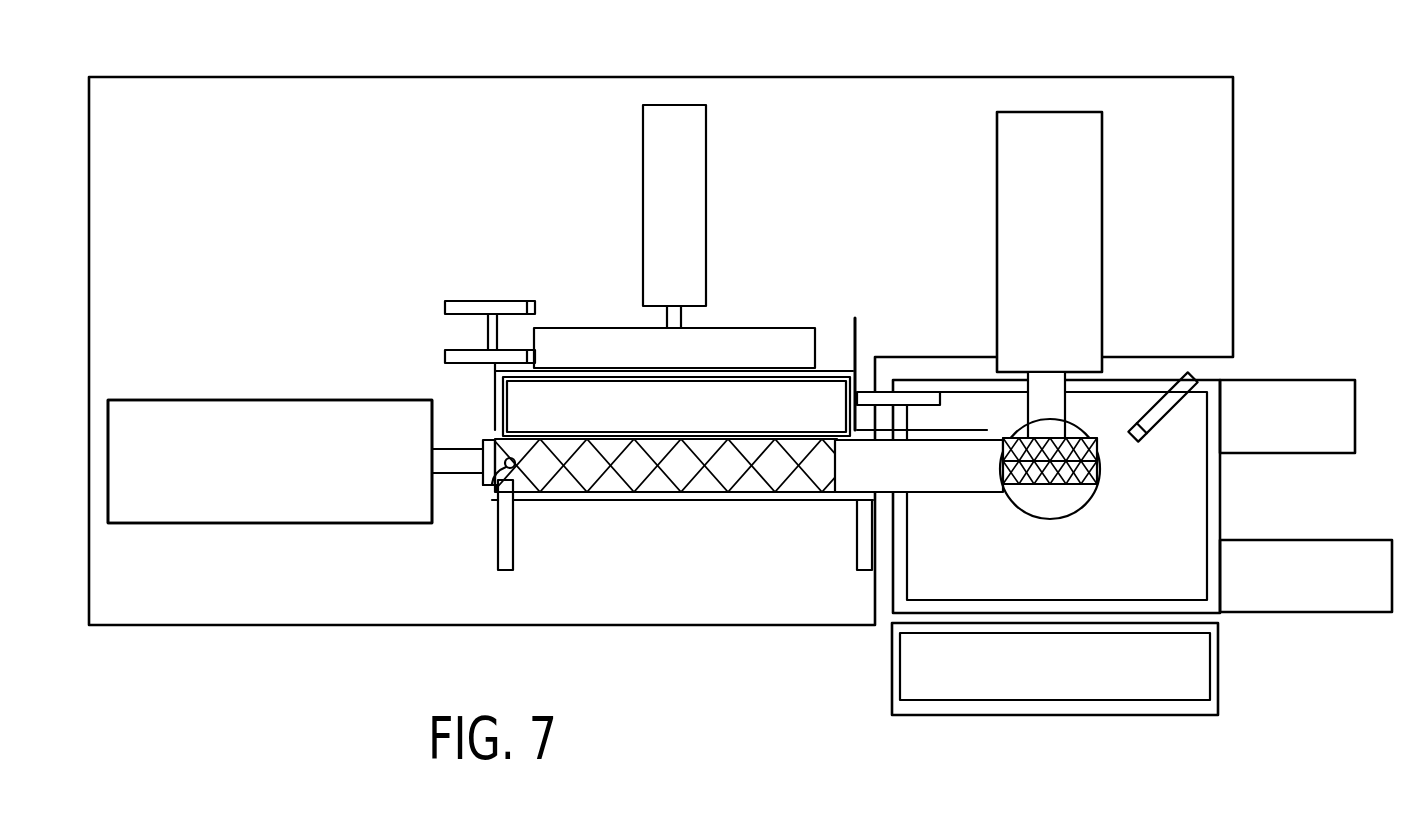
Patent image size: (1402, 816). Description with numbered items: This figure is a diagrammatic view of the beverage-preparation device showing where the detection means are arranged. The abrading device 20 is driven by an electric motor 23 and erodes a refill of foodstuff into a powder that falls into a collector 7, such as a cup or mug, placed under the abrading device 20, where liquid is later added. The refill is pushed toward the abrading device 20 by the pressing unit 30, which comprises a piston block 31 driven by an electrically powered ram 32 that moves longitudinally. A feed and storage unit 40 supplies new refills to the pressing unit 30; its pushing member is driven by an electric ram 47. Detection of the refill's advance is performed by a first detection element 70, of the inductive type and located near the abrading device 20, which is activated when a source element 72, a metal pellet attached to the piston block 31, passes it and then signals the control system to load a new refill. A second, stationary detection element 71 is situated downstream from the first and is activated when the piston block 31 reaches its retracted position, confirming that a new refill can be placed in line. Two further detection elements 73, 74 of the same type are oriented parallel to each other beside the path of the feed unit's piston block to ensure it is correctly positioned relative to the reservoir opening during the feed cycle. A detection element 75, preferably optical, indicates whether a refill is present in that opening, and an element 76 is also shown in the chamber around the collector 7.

The collector 7 is at (1015, 513).
The abrading device 20 is at (1096, 507).
The electric motor 23 is at (1083, 302).
The pressing unit 30 is at (257, 390).
The piston block 31 is at (657, 484).
The ram 32 is at (206, 505).
The feed and storage unit 40 is at (630, 198).
The electric ram 47 is at (690, 217).
The first detection element 70 is at (862, 547).
The second detection element 71 is at (513, 548).
The source element 72 is at (487, 488).
The detection element 73 is at (445, 351).
The detection element 74 is at (468, 301).
The detection element 75 is at (913, 392).
The inclined guide 76 is at (1150, 434).